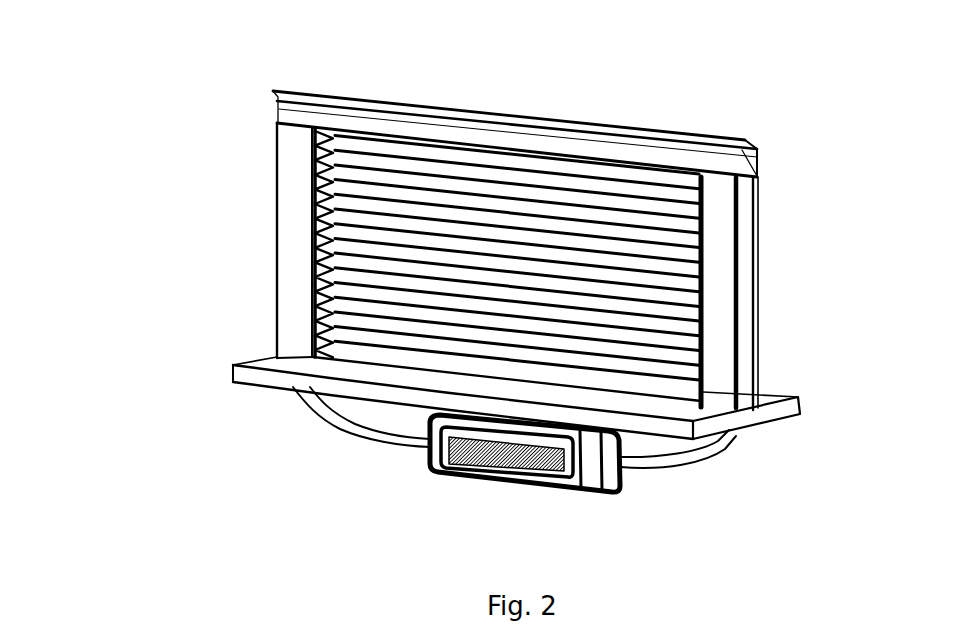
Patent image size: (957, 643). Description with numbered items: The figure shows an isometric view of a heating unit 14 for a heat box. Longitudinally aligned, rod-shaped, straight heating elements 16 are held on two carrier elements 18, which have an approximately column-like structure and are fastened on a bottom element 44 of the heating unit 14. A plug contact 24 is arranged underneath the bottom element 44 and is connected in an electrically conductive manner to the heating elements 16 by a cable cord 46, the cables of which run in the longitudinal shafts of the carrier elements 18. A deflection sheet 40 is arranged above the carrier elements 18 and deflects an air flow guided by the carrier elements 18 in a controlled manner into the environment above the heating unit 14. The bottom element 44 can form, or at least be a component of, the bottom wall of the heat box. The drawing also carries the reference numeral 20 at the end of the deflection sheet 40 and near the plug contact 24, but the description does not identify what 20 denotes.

The heating unit 14 is at (160, 144).
The heating elements 16 is at (640, 187).
The carrier elements 18 is at (273, 234).
The fluid connection port 20 is at (745, 121).
The plug contact 24 is at (588, 494).
The deflection sheet 40 is at (332, 88).
The bottom element 44 is at (248, 398).
The cable cord 46 is at (344, 432).